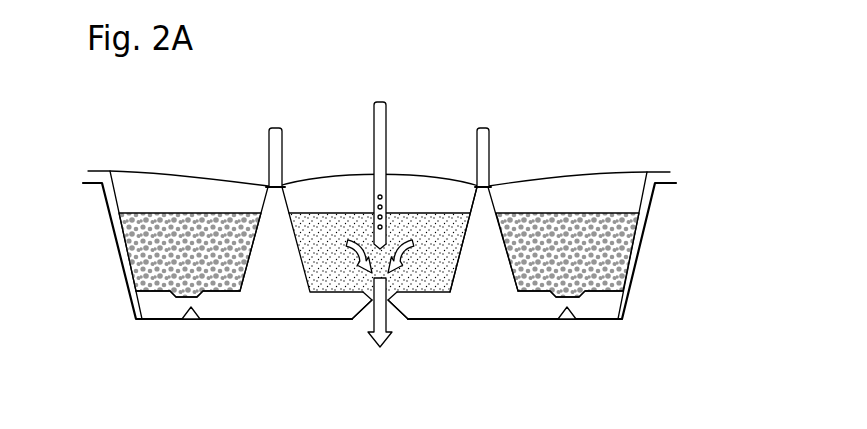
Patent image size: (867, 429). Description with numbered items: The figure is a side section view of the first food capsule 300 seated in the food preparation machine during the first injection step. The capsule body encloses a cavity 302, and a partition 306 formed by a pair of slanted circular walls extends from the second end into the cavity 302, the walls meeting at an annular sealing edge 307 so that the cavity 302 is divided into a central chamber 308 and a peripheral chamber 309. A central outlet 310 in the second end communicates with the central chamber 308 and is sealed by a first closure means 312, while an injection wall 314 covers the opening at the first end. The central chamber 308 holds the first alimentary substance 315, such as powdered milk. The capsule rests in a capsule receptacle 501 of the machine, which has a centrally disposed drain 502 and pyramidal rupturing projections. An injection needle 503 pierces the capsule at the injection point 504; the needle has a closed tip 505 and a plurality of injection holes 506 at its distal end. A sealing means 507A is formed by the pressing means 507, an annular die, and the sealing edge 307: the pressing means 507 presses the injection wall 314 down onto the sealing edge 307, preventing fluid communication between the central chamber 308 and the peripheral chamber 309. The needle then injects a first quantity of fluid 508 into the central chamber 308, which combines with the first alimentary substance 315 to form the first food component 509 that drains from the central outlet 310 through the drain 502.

The first food capsule 300 is at (662, 225).
The cavity 302 is at (185, 187).
The partition 306 is at (247, 271).
The sealing edge 307 is at (270, 186).
The central chamber 308 is at (453, 281).
The peripheral chamber 309 is at (142, 245).
The central outlet 310 is at (394, 318).
The first closure means 312 is at (365, 308).
The injection wall 314 is at (599, 171).
The first alimentary substance 315 is at (331, 276).
The capsule receptacle 501 is at (126, 282).
The drain 502 is at (370, 323).
The injection needle 503 is at (387, 111).
The injection point 504 is at (396, 166).
The closed tip 505 is at (375, 230).
The injection holes 506 is at (400, 210).
The pressing means 507 is at (495, 123).
The sealing means 507A is at (266, 128).
The first quantity of fluid 508 is at (346, 233).
The first food component 509 is at (386, 331).